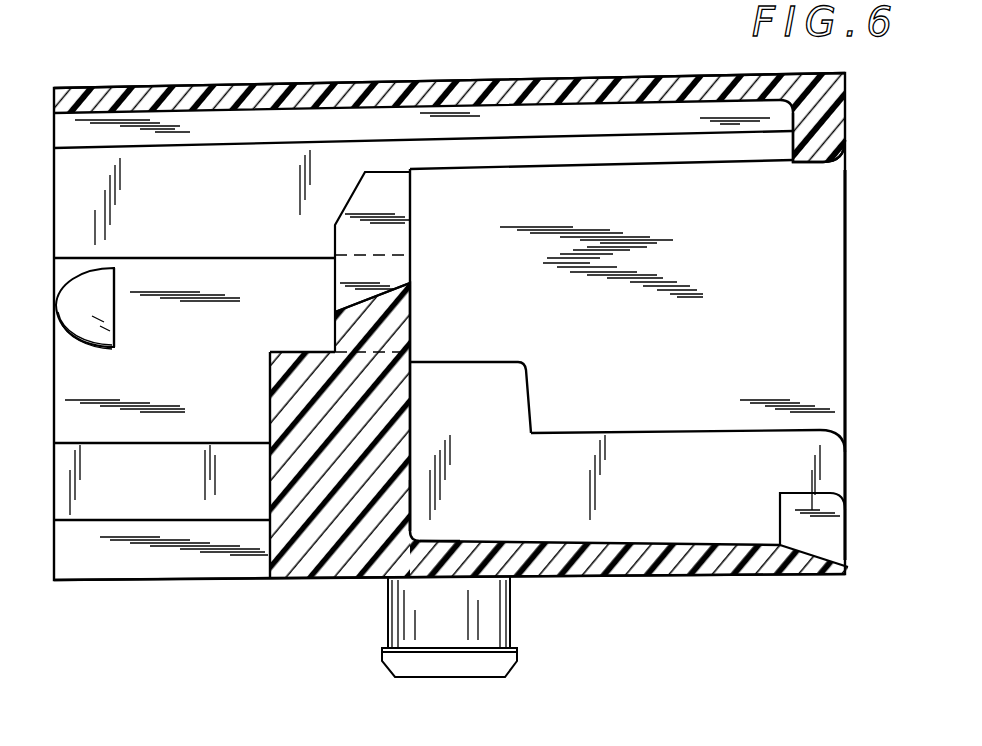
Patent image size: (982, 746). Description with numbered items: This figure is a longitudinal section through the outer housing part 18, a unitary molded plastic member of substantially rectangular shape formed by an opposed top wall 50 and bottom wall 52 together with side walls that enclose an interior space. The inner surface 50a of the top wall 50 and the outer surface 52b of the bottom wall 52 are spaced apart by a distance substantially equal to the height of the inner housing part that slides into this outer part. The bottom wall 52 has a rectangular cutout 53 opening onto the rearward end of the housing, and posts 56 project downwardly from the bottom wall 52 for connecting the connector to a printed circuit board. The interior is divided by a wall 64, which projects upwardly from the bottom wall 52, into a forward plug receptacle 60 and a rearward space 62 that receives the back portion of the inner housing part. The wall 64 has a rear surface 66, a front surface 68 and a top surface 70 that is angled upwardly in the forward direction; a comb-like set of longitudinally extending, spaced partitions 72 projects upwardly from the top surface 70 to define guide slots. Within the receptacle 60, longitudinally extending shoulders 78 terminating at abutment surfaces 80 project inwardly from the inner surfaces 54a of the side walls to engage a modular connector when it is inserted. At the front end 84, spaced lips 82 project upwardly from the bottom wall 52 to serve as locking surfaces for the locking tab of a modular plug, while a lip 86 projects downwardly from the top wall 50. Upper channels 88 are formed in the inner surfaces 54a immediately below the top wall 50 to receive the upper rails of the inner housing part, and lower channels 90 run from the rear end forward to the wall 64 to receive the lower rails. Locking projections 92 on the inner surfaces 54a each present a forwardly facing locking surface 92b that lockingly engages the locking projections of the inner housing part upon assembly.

The outer housing part 18 is at (714, 70).
The top wall 50 is at (568, 44).
The inner surface of top wall 50a is at (312, 108).
The upper channels 88 is at (183, 118).
The lip 86 is at (842, 132).
The forward plug receptacle 60 is at (797, 212).
The inner surfaces of side walls 54a is at (504, 311).
The partitions 72 is at (400, 214).
The top surface of wall 70 is at (352, 306).
The wall 64 is at (413, 347).
The rear surface of wall 66 is at (268, 410).
The front surface of wall 68 is at (413, 412).
The abutment surfaces 80 is at (530, 387).
The shoulders 78 is at (668, 431).
The front end 84 is at (850, 380).
The lips 82 is at (843, 544).
The bottom wall 52 is at (596, 577).
The outer surface of bottom wall 52b is at (646, 575).
The rectangular cutout 53 is at (175, 580).
The rearward space 62 is at (95, 237).
The lower channels 90 is at (100, 522).
The locking projections 92 is at (96, 348).
The locking surface 92b is at (116, 312).
The posts 56 is at (390, 622).